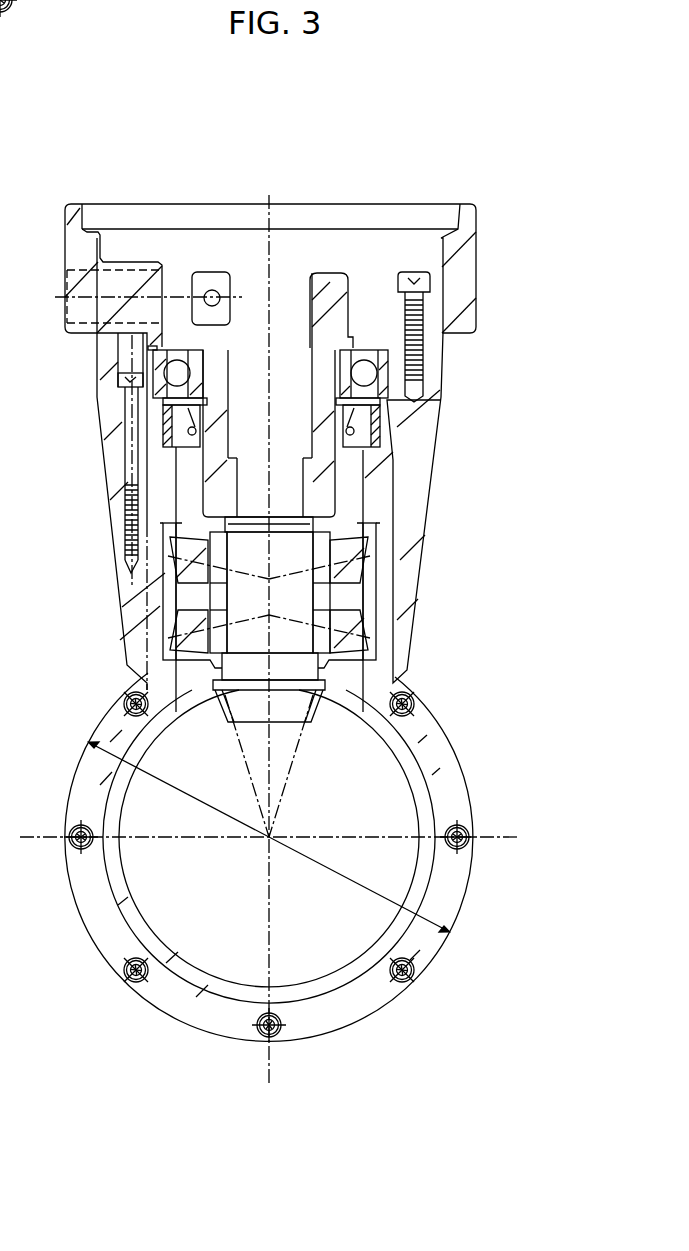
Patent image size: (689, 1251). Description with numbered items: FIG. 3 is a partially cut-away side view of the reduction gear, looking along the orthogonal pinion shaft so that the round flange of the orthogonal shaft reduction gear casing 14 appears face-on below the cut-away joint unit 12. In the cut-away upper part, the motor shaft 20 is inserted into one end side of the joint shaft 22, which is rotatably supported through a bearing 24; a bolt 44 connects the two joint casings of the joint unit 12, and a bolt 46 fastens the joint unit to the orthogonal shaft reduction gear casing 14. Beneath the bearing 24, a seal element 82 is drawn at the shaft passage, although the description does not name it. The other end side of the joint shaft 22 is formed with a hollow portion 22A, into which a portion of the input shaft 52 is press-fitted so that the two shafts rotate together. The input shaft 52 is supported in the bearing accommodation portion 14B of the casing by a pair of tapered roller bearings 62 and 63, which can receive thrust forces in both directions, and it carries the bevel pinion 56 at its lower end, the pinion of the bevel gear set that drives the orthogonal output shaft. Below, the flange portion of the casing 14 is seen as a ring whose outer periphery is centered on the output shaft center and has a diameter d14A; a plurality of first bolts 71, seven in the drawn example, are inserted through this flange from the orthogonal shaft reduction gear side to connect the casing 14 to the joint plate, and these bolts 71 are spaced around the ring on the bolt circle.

The joint unit 12 is at (481, 234).
The orthogonal shaft reduction gear casing 14 is at (332, 857).
The bearing accommodation portion 14B is at (132, 599).
The diameter of the flange portion d14A is at (197, 797).
The motor shaft 20 is at (435, 400).
The joint shaft 22 is at (353, 403).
The hollow portion 22A is at (335, 494).
The bearing 24 is at (367, 373).
The bolt 44 is at (420, 318).
The bolt 46 is at (128, 432).
The input shaft 52 is at (297, 596).
The bevel pinion 56 is at (318, 714).
The tapered roller bearing 62 is at (381, 561).
The tapered roller bearing 63 is at (381, 636).
The first bolt 71 is at (474, 837).
The oil seal 82 is at (377, 427).